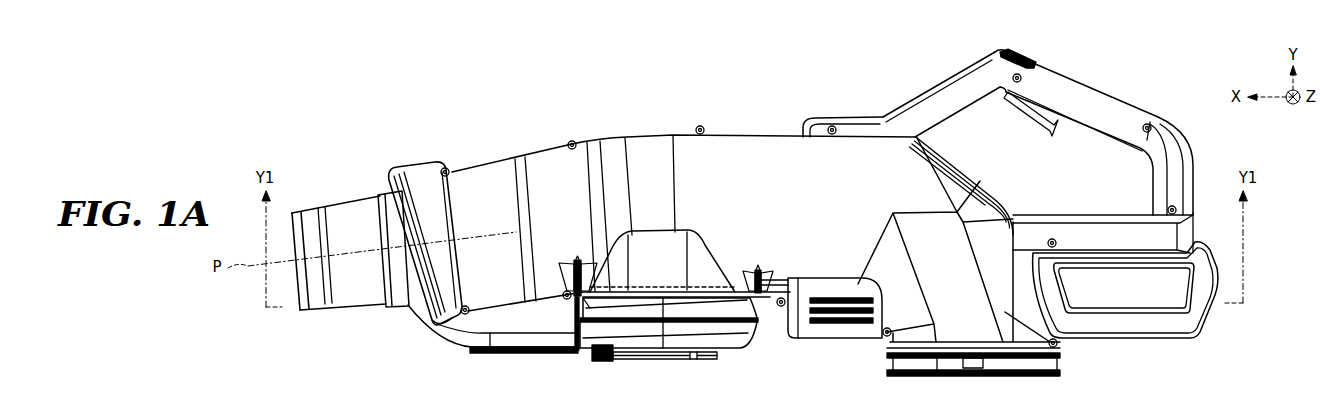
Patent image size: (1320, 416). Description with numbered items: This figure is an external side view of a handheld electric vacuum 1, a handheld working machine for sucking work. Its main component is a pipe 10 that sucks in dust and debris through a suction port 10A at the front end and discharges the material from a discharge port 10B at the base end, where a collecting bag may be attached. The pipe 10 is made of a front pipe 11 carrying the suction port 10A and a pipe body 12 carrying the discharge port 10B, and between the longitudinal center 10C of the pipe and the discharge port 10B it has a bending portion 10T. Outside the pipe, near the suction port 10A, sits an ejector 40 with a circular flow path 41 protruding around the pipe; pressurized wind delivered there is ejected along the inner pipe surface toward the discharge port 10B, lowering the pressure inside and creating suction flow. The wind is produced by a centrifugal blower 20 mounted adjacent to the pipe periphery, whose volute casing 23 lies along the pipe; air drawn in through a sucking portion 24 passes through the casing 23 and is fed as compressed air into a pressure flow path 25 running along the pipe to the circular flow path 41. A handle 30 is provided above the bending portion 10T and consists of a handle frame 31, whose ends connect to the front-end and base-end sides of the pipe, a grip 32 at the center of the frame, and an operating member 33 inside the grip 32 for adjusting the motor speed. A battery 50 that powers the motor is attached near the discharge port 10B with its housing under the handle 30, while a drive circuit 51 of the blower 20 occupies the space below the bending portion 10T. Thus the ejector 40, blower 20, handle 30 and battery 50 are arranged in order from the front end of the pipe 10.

The handheld electric vacuum 1 is at (755, 216).
The pipe 10 is at (739, 223).
The suction port 10A is at (300, 289).
The discharge port 10B is at (973, 381).
The center of the pipe 10C is at (690, 100).
The bending portion 10T is at (962, 134).
The front pipe 11 is at (347, 250).
The pipe body 12 is at (684, 177).
The blower 20 is at (673, 311).
The casing 23 is at (594, 352).
The sucking portion 24 is at (665, 376).
The pressure flow path 25 is at (493, 351).
The handle 30 is at (998, 117).
The handle frame 31 is at (941, 85).
The grip 32 is at (1094, 117).
The operating member 33 is at (1038, 126).
The ejector 40 is at (429, 234).
The circular flow path 41 is at (450, 343).
The battery 50 is at (1125, 307).
The drive circuit 51 is at (834, 331).